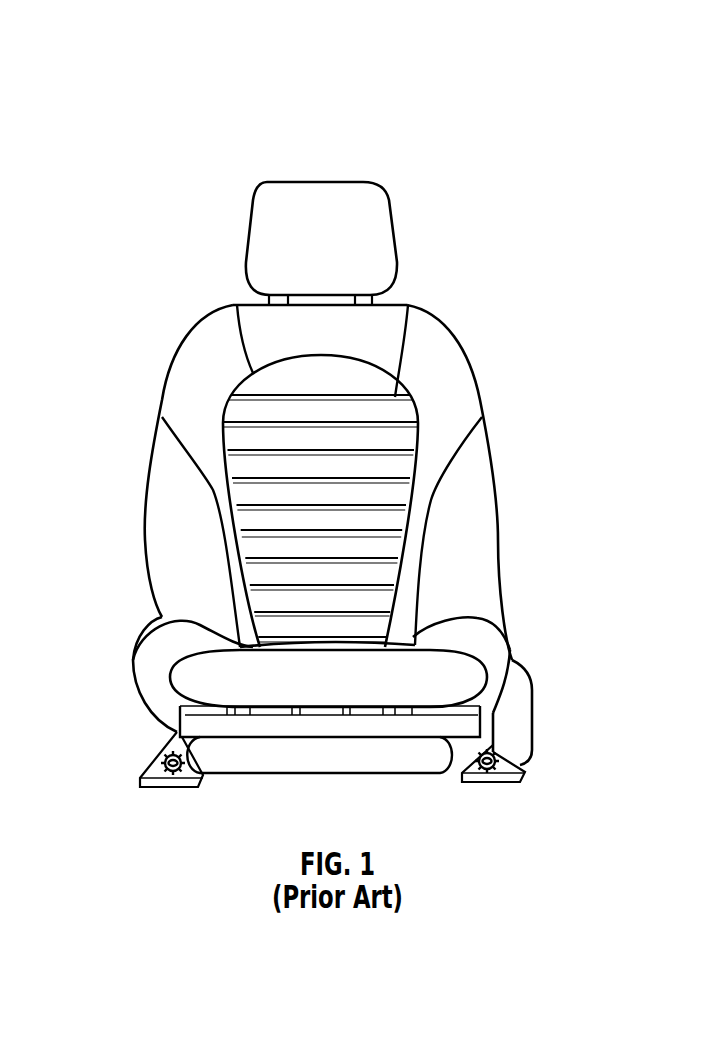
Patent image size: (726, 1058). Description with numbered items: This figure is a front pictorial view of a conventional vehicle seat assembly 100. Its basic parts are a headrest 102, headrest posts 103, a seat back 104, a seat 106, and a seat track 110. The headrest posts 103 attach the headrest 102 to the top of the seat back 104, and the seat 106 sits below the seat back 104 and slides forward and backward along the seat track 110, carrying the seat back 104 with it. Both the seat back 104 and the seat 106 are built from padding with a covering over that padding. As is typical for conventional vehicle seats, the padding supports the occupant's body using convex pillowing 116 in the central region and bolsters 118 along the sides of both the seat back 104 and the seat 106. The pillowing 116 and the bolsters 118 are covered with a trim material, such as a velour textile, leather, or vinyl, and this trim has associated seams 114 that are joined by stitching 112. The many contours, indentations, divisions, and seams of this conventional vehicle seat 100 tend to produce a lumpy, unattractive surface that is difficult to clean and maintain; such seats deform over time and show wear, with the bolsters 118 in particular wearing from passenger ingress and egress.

The vehicle seat assembly 100 is at (366, 102).
The headrest 102 is at (375, 233).
The headrest posts 103 is at (365, 302).
The seat back 104 is at (507, 424).
The seat 106 is at (558, 693).
The seat track 110 is at (518, 768).
The stitching 112 is at (440, 323).
The seams 114 is at (238, 493).
The convex pillowing 116 is at (380, 552).
The bolsters 118 is at (482, 470).